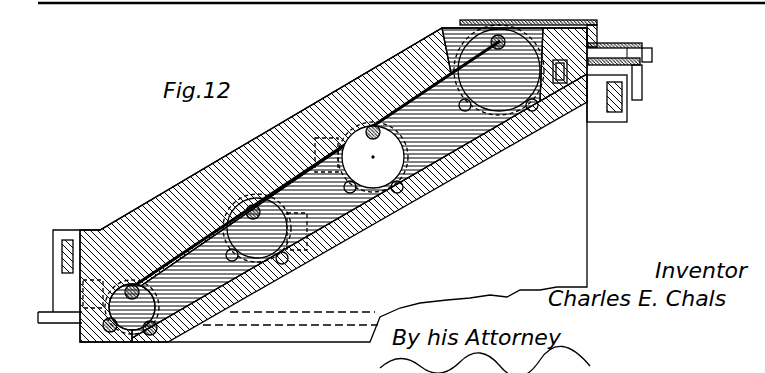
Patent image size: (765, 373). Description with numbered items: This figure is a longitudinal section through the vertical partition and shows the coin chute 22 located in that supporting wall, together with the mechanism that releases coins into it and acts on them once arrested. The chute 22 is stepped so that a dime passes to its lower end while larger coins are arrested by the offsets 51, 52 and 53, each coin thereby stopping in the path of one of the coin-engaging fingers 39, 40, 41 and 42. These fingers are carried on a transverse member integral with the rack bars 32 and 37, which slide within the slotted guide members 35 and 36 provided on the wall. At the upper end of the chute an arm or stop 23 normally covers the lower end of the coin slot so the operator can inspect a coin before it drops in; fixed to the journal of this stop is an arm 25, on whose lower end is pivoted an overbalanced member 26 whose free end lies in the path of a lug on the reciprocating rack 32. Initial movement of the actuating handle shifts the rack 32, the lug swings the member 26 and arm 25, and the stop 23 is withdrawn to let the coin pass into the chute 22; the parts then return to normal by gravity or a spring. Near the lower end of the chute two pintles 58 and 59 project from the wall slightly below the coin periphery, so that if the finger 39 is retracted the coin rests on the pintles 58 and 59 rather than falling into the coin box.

The coin chute 22 is at (445, 137).
The arm or stop 23 is at (551, 21).
The arm 25 is at (642, 88).
The member 26 is at (627, 55).
The rack bar 32 is at (622, 107).
The slotted guide member 35 is at (600, 115).
The slotted guide member 36 is at (58, 295).
The rack bar 37 is at (62, 242).
The coin-engaging finger 39 is at (130, 288).
The coin-engaging finger 40 is at (250, 205).
The coin-engaging finger 41 is at (371, 128).
The coin-engaging finger 42 is at (442, 32).
The offset 51 is at (183, 183).
The offset 52 is at (323, 120).
The offset 53 is at (427, 50).
The pintle 58 is at (153, 335).
The pintle 59 is at (108, 335).